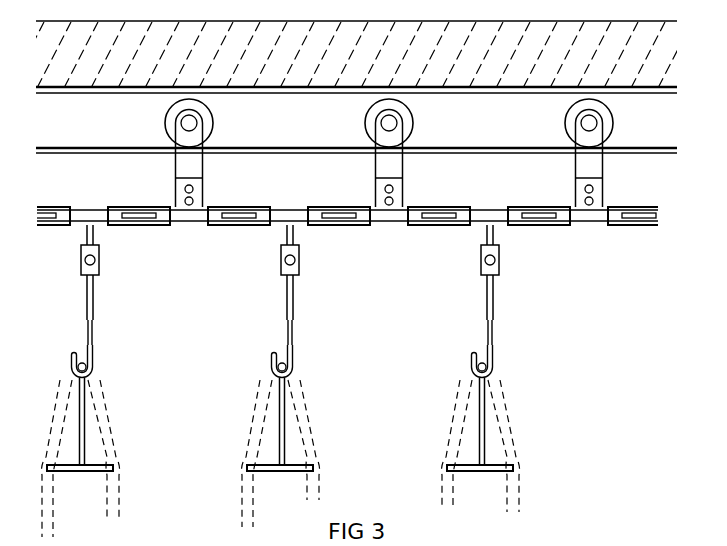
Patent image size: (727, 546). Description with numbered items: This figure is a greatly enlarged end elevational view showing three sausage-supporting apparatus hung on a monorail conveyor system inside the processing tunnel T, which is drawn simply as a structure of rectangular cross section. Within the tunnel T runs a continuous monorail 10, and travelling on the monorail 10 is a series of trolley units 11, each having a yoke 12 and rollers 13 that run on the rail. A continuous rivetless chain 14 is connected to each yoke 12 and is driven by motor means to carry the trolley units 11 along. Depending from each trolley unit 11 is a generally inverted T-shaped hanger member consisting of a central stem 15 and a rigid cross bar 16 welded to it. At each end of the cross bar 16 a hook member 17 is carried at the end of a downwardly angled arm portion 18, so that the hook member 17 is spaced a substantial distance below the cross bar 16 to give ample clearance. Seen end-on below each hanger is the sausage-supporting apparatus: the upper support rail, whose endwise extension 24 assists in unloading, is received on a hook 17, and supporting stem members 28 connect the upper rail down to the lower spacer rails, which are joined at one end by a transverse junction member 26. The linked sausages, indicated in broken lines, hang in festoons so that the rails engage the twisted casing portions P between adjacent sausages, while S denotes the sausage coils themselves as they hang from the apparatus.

The tunnel T is at (300, 78).
The monorail 10 is at (333, 152).
The trolley unit 11 is at (205, 169).
The yoke 12 is at (183, 223).
The rollers 13 is at (412, 121).
The rivetless chain 14 is at (438, 208).
The central stem 15 is at (93, 297).
The cross bar 16 is at (91, 323).
The hook member 17 is at (272, 357).
The downwardly angled arm portion 18 is at (291, 347).
The endwise extension 24 is at (95, 367).
The transverse junction member 26 is at (66, 472).
The supporting stem member 28 is at (285, 432).
The twisted casing portion P is at (114, 468).
The garment shoulder portion S is at (262, 388).